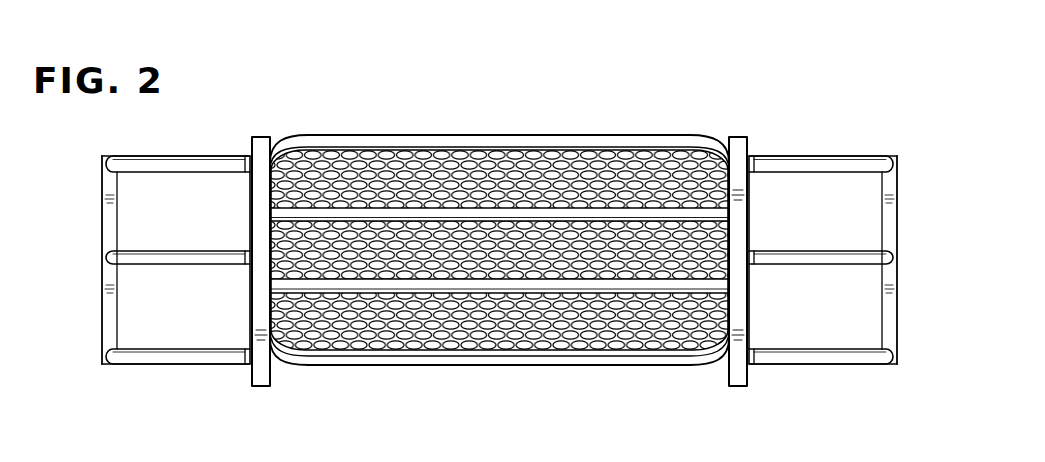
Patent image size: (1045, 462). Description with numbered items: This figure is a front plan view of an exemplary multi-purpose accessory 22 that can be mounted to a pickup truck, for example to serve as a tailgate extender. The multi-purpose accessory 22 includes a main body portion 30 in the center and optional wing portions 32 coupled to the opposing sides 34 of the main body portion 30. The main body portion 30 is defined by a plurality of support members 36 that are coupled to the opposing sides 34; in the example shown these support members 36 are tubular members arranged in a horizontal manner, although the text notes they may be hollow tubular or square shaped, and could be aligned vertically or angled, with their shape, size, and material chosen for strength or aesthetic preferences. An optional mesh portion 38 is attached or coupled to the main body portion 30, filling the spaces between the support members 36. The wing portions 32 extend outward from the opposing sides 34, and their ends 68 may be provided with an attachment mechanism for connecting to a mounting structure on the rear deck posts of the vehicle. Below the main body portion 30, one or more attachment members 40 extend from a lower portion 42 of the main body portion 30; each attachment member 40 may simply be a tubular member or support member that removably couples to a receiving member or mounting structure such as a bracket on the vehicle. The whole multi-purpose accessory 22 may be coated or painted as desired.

The multi-purpose accessory 22 is at (724, 83).
The main body portion 30 is at (748, 401).
The wing portions 32 is at (102, 373).
The opposing sides 34 is at (261, 136).
The support members 36 is at (192, 349).
The mesh portion 38 is at (545, 175).
The attachment member 40 is at (270, 377).
The lower portion 42 is at (688, 369).
The ends 68 is at (101, 208).